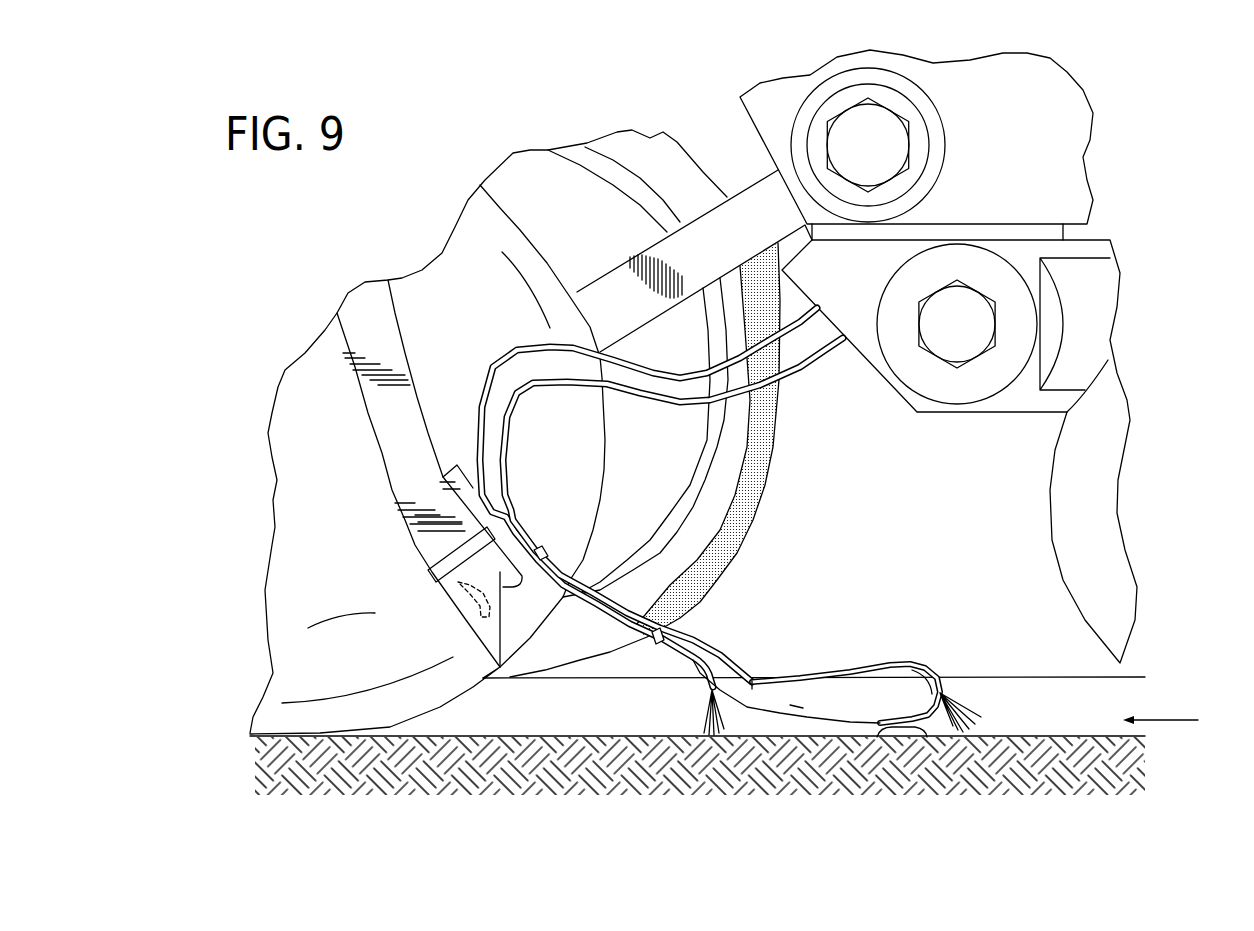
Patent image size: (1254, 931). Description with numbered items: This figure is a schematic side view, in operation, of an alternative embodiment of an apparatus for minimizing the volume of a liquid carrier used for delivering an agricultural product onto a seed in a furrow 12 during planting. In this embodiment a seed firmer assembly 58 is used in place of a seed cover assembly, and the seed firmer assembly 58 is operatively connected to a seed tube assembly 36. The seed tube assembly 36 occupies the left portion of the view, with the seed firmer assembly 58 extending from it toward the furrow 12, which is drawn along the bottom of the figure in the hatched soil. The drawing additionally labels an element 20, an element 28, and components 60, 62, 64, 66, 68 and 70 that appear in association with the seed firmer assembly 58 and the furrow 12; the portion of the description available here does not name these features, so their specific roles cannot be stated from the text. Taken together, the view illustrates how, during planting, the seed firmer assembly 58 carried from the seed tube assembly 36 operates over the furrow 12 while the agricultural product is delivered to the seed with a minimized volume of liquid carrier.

The furrow 12 is at (1030, 735).
The direction of travel 20 is at (1198, 720).
The furrow 28 is at (470, 600).
The seed tube assembly 36 is at (372, 470).
The seed firmer assembly 58 is at (879, 660).
The firmer tip 60 is at (917, 683).
The first liquid conduit 62 is at (505, 352).
The liquid discharge 64 is at (980, 700).
The conduit clips 66 is at (543, 550).
The second liquid conduit 68 is at (517, 415).
The liquid discharge 70 is at (702, 714).